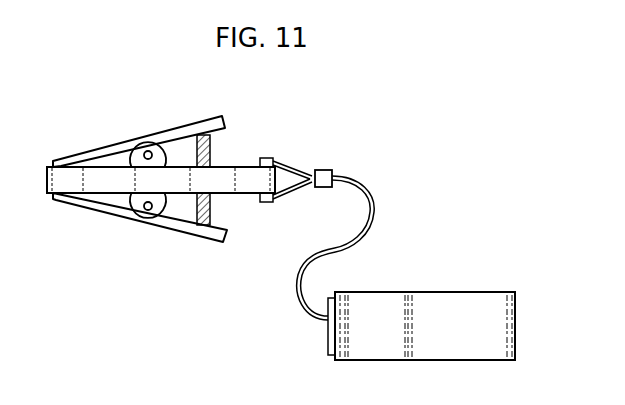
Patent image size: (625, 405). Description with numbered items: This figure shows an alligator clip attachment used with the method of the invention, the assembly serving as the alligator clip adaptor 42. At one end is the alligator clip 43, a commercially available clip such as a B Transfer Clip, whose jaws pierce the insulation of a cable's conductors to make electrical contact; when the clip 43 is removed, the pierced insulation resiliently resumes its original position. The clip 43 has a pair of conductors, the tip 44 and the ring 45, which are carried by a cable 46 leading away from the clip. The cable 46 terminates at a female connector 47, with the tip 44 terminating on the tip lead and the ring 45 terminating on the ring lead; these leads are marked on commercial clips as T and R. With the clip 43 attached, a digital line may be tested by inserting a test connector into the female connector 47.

The alligator clip adaptor 42 is at (349, 269).
The alligator clip 43 is at (164, 237).
The tip 44 is at (275, 160).
The ring 45 is at (275, 201).
The cable 46 is at (368, 195).
The female connector 47 is at (515, 307).